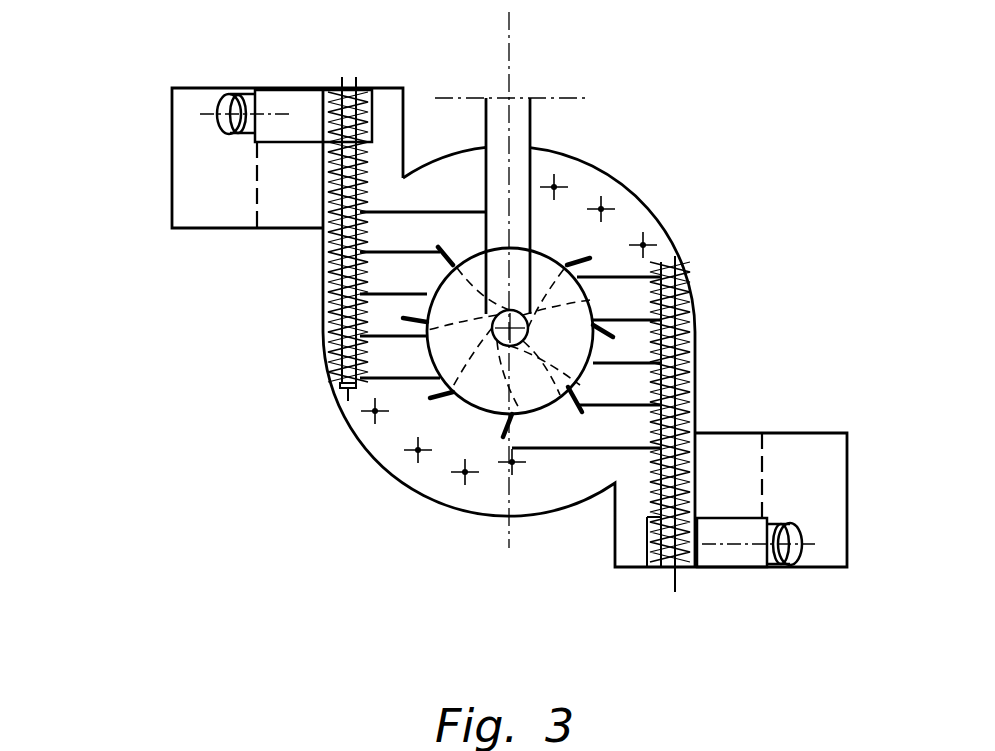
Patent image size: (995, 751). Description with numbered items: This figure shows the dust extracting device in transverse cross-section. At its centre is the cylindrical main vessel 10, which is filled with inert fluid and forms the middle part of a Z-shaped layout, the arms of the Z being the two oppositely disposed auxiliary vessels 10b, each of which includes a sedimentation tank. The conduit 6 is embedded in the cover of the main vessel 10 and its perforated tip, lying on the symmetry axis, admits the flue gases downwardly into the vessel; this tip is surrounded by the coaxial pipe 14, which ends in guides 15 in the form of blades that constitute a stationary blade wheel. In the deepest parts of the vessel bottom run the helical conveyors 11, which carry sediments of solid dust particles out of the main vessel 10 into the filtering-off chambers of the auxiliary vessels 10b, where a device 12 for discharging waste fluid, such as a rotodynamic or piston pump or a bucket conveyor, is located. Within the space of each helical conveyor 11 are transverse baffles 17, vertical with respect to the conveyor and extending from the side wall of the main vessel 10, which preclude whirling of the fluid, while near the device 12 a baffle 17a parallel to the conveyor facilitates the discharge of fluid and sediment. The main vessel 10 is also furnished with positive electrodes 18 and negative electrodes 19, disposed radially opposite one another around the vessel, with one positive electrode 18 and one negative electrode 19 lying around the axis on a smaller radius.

The conduit 6 is at (519, 118).
The main vessel 10 is at (629, 211).
The auxiliary vessel 10b is at (47, 232).
The helical conveyor 11 is at (323, 258).
The device for discharging waste fluid 12 is at (298, 108).
The coaxial pipe 14 is at (477, 410).
The guides 15 is at (437, 397).
The transverse baffles 17 is at (323, 342).
The baffle 17a is at (363, 88).
The positive electrode 18 is at (554, 187).
The negative electrode 19 is at (375, 411).